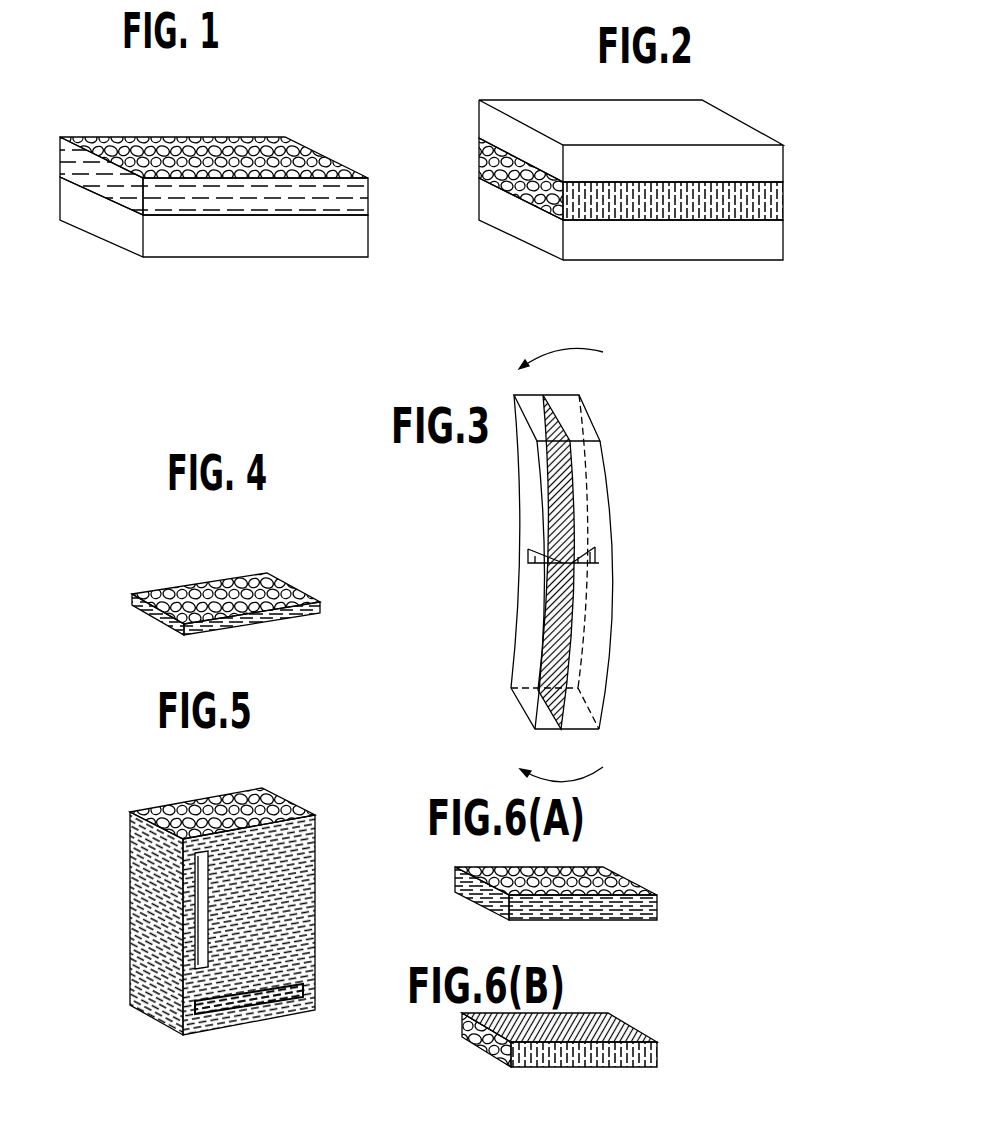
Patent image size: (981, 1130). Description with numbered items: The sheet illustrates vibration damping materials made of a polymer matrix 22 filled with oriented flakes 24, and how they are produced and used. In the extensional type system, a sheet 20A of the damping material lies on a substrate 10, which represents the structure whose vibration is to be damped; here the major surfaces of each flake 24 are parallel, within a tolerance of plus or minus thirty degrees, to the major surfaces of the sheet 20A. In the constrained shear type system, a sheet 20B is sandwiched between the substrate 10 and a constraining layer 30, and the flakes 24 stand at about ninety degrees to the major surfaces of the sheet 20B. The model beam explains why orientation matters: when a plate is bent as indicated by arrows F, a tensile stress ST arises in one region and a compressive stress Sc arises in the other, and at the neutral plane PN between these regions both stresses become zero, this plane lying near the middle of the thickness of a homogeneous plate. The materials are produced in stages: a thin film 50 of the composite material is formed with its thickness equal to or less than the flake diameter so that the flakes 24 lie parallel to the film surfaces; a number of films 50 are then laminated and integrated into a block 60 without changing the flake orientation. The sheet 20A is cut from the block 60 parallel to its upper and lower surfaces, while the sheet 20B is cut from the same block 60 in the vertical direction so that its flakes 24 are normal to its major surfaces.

In FIG. 1, the substrate 10 is at (280, 244).
In FIG. 2, the substrate 10 is at (627, 247).
In FIG. 1, the sheet of damping material 20A is at (246, 170).
In FIG. 5, the sheet of damping material 20A is at (270, 1000).
In FIG. 6A, the sheet of damping material 20A is at (570, 900).
In FIG. 2, the sheet of damping material 20B is at (705, 208).
In FIG. 5, the sheet of damping material 20B is at (210, 893).
In FIG. 6B, the sheet of damping material 20B is at (542, 1070).
In FIG. 1, the polymer matrix 22 is at (318, 158).
In FIG. 2, the polymer matrix 22 is at (489, 162).
In FIG. 4, the polymer matrix 22 is at (141, 593).
In FIG. 5, the polymer matrix 22 is at (279, 804).
In FIG. 6A, the polymer matrix 22 is at (612, 877).
In FIG. 6B, the polymer matrix 22 is at (469, 1070).
In FIG. 1, the flakes 24 is at (237, 157).
In FIG. 2, the flakes 24 is at (490, 172).
In FIG. 4, the flakes 24 is at (220, 600).
In FIG. 5, the flakes 24 is at (220, 815).
In FIG. 6A, the flakes 24 is at (560, 878).
In FIG. 6B, the flakes 24 is at (477, 1047).
In FIG. 2, the constraining layer 30 is at (551, 112).
In FIG. 4, the film of composite material 50 is at (239, 586).
In FIG. 5, the block 60 is at (253, 909).
In FIG. 3, the neutral plane PN is at (579, 504).
In FIG. 3, the compressive stress Sc is at (528, 562).
In FIG. 3, the tensile stress ST is at (599, 562).
In FIG. 3, the bending moment arrows F is at (569, 564).